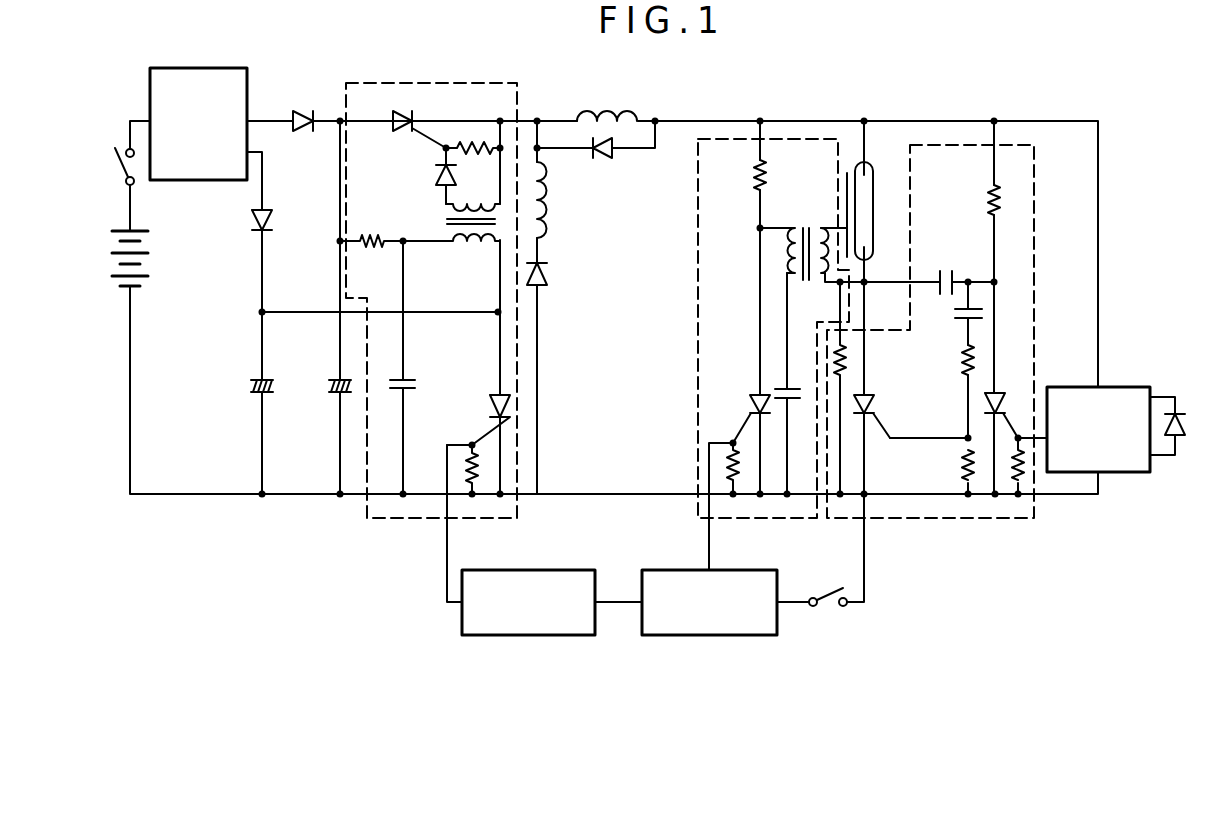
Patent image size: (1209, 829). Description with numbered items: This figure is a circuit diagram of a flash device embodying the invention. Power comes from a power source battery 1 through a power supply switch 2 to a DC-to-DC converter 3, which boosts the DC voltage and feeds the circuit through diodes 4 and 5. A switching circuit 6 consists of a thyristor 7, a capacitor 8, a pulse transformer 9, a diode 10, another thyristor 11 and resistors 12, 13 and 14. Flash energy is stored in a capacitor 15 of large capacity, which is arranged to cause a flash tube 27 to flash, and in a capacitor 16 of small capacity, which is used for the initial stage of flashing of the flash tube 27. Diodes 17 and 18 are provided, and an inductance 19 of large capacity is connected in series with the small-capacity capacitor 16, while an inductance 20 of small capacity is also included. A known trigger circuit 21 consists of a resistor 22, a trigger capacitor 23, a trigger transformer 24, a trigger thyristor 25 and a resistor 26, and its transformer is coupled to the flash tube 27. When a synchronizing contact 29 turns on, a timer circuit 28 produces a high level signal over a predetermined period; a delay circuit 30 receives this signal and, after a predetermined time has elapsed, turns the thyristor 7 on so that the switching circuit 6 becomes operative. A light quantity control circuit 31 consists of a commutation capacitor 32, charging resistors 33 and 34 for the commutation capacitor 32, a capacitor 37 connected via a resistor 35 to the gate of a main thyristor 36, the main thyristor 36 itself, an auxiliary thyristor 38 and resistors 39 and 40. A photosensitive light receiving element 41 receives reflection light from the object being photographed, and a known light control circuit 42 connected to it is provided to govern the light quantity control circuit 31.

The power source battery 1 is at (152, 264).
The power supply switch 2 is at (117, 158).
The DC-to-DC converter 3 is at (226, 68).
The diode 4 is at (301, 110).
The diode 5 is at (251, 219).
The switching circuit 6 is at (487, 83).
The thyristor 7 is at (490, 406).
The capacitor 8 is at (420, 386).
The pulse transformer 9 is at (447, 221).
The diode 10 is at (436, 176).
The thyristor 11 is at (400, 132).
The resistor 12 is at (472, 156).
The resistor 13 is at (369, 236).
The resistor 14 is at (460, 471).
The capacitor 15 is at (328, 388).
The capacitor 16 is at (250, 388).
The diode 17 is at (548, 276).
The diode 18 is at (601, 163).
The inductance 19 is at (546, 202).
The inductance 20 is at (610, 111).
The trigger circuit 21 is at (698, 295).
The resistor 22 is at (756, 175).
The trigger capacitor 23 is at (800, 388).
The trigger transformer 24 is at (803, 225).
The trigger thyristor 25 is at (748, 403).
The resistor 26 is at (722, 468).
The flash tube 27 is at (873, 195).
The timer circuit 28 is at (740, 570).
The synchronizing contact 29 is at (827, 590).
The delay circuit 30 is at (572, 570).
The light quantity control circuit 31 is at (1034, 158).
The commutation capacitor 32 is at (945, 270).
The charging resistor 33 is at (986, 200).
The charging resistor 34 is at (850, 355).
The resistor 35 is at (961, 362).
The main thyristor 36 is at (878, 405).
The capacitor 37 is at (954, 313).
The auxiliary thyristor 38 is at (1000, 398).
The resistor 39 is at (958, 469).
The resistor 40 is at (1010, 462).
The photosensitive light receiving element 41 is at (1179, 406).
The light control circuit 42 is at (1118, 387).